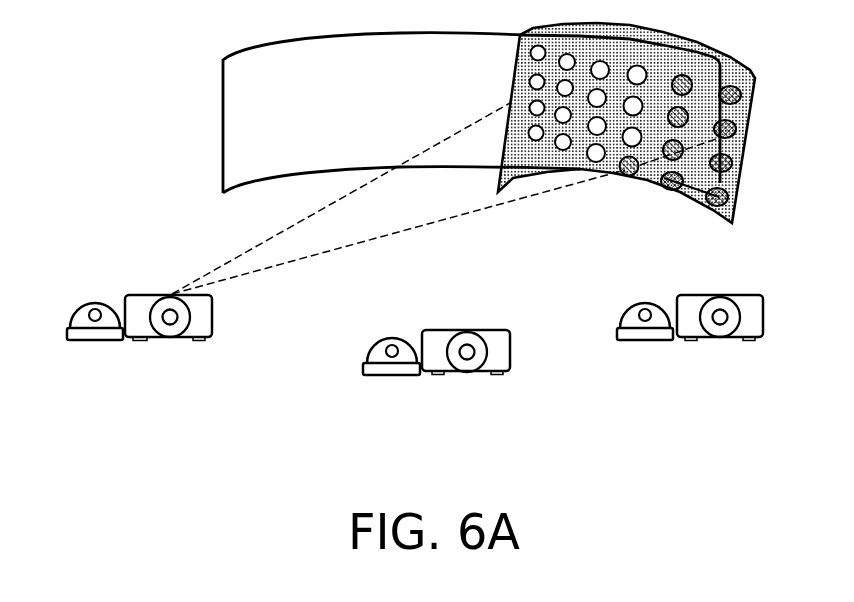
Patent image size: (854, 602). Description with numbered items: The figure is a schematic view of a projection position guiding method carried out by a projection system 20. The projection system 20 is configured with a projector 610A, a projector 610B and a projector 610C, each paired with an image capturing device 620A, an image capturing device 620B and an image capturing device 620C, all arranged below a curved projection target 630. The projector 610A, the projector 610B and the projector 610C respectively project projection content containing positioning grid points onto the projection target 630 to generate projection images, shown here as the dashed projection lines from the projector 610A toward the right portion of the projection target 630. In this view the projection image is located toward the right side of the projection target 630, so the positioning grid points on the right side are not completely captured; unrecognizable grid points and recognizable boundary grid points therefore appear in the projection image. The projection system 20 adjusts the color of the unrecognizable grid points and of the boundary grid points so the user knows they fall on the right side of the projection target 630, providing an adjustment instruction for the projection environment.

The projection target 630 is at (223, 127).
The projector 610A is at (170, 338).
The image capturing device 620A is at (95, 341).
The projector 610B is at (467, 372).
The image capturing device 620B is at (392, 376).
The projector 610C is at (720, 338).
The image capturing device 620C is at (645, 341).
The projection system 20 is at (806, 471).